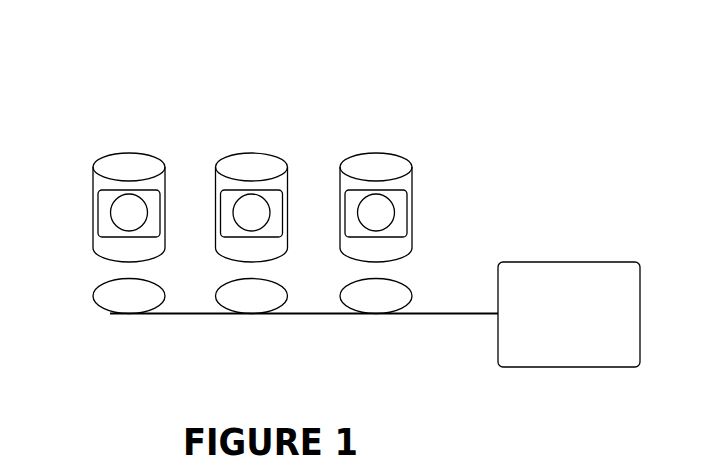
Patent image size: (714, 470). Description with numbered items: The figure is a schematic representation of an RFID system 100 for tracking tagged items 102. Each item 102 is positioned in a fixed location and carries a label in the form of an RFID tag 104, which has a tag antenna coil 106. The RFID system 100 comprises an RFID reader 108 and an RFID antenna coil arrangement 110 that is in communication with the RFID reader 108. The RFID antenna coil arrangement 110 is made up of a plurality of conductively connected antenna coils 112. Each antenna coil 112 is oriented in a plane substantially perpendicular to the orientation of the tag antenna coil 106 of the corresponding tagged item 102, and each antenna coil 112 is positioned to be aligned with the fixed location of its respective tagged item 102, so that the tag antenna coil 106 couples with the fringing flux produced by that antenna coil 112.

The RFID system 100 is at (572, 98).
The tagged item 102 is at (128, 156).
The RFID tag 104 is at (97, 204).
The tag antenna coil 106 is at (112, 218).
The RFID reader 108 is at (551, 262).
The RFID antenna coil arrangement 110 is at (173, 354).
The antenna coil 112 is at (287, 300).